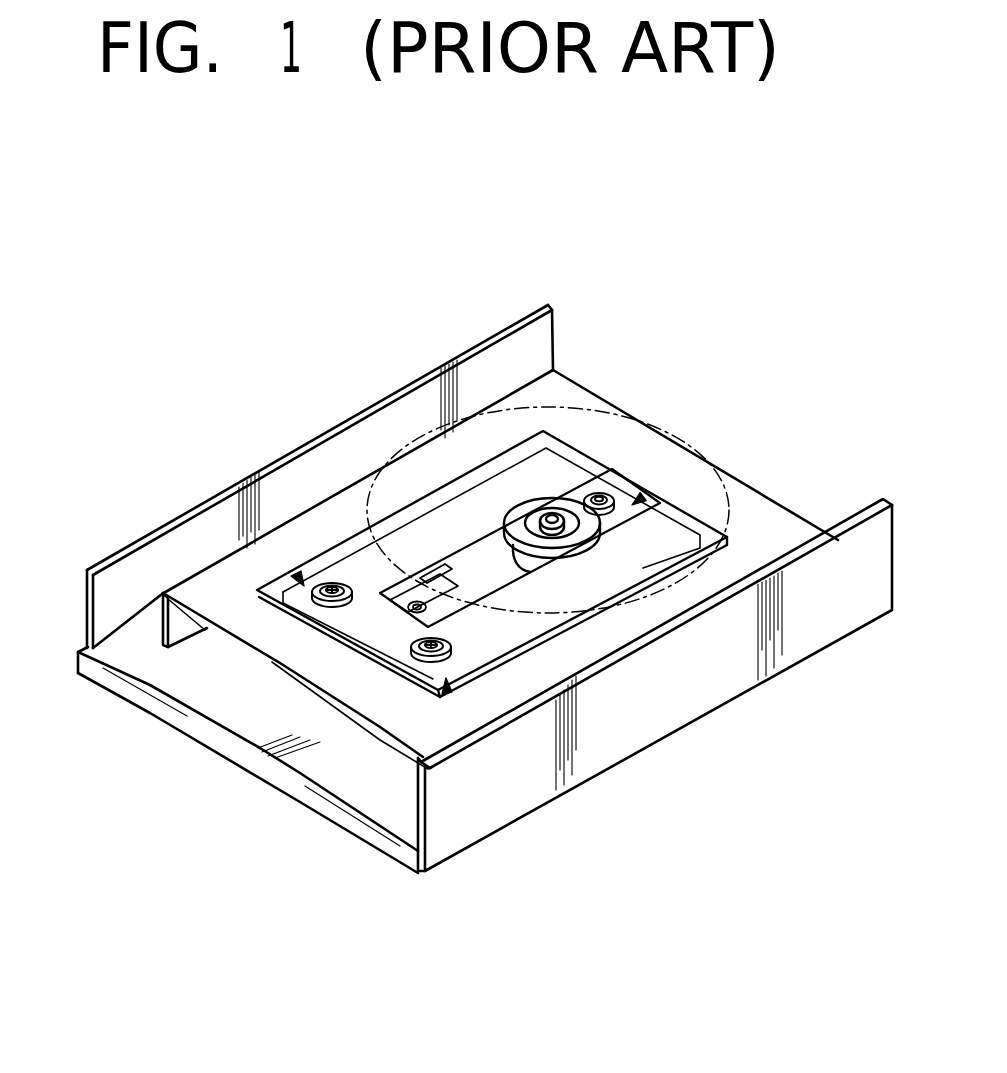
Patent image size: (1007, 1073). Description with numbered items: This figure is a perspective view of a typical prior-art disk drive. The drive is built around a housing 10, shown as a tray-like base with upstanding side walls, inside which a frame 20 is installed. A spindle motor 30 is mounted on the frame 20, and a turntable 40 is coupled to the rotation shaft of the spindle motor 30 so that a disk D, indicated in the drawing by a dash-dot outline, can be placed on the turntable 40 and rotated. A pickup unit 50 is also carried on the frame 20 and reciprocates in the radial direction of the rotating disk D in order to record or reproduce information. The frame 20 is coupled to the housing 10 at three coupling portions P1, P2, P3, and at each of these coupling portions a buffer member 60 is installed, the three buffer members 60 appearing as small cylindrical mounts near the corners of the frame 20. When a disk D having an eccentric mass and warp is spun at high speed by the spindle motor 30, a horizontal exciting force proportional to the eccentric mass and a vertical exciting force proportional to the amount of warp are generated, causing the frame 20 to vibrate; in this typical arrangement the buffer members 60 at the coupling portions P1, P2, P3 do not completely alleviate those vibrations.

The housing 10 is at (137, 547).
The frame 20 is at (566, 482).
The spindle motor 30 is at (478, 578).
The turntable 40 is at (550, 516).
The pickup unit 50 is at (403, 582).
The buffer members 60 is at (327, 583).
The disk D is at (735, 470).
The coupling portion P1 is at (302, 583).
The coupling portion P2 is at (637, 497).
The coupling portion P3 is at (446, 680).